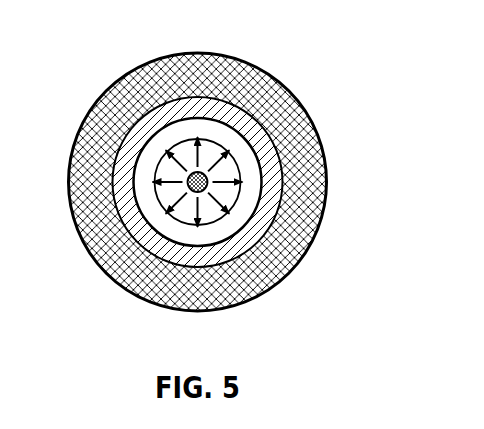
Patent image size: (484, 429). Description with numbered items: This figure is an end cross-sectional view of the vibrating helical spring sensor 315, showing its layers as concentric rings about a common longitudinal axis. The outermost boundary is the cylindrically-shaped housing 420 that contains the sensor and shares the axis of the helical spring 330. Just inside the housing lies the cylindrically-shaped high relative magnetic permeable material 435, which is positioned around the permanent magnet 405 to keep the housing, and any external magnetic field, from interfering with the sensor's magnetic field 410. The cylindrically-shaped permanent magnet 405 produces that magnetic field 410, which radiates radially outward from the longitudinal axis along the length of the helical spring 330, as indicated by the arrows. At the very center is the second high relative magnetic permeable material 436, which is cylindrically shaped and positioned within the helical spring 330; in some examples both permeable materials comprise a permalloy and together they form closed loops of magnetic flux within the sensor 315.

The vibrating helical spring sensor 315 is at (347, 349).
The housing 420 is at (268, 75).
The high relative magnetic permeable material 435 is at (302, 162).
The permanent magnet 405 is at (168, 102).
The magnetic field 410 is at (135, 175).
The helical spring 330 is at (178, 220).
The high relative magnetic permeable material 436 is at (203, 190).